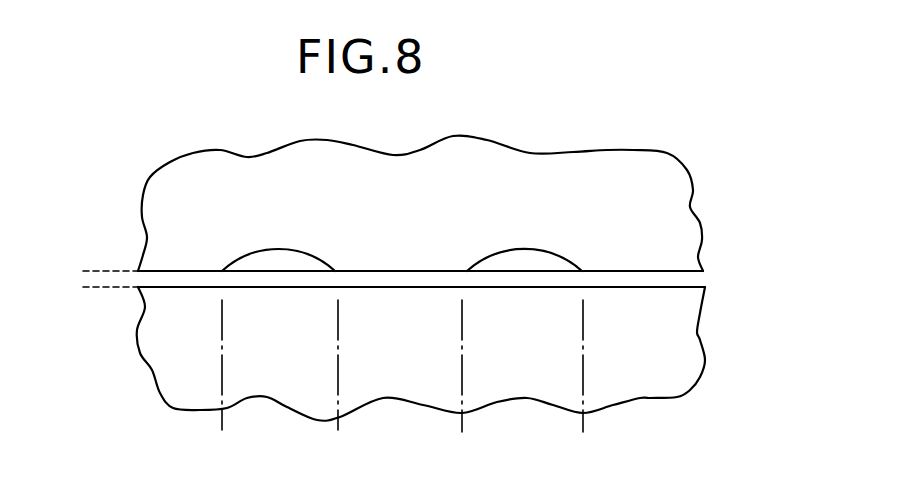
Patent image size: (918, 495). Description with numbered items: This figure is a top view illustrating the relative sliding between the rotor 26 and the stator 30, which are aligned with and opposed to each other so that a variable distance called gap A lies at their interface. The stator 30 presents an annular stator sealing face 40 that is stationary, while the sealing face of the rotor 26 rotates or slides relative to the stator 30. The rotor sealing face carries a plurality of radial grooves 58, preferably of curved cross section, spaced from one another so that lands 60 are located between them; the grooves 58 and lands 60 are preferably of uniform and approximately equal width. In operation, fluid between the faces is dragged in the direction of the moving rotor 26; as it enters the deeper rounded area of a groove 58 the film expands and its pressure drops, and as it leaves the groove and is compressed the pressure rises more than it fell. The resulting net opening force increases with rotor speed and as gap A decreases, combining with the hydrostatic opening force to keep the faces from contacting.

The rotor 26 is at (630, 150).
The stator 30 is at (700, 340).
The stator sealing face 40 is at (403, 288).
The radial grooves 58 is at (272, 249).
The lands 60 is at (400, 271).
The gap A is at (87, 243).